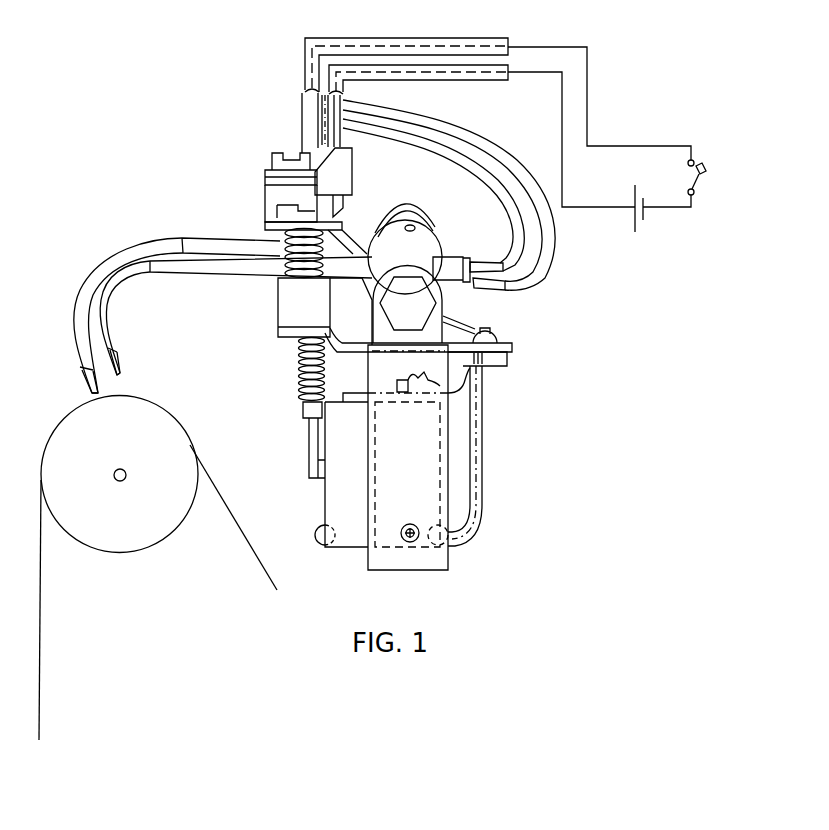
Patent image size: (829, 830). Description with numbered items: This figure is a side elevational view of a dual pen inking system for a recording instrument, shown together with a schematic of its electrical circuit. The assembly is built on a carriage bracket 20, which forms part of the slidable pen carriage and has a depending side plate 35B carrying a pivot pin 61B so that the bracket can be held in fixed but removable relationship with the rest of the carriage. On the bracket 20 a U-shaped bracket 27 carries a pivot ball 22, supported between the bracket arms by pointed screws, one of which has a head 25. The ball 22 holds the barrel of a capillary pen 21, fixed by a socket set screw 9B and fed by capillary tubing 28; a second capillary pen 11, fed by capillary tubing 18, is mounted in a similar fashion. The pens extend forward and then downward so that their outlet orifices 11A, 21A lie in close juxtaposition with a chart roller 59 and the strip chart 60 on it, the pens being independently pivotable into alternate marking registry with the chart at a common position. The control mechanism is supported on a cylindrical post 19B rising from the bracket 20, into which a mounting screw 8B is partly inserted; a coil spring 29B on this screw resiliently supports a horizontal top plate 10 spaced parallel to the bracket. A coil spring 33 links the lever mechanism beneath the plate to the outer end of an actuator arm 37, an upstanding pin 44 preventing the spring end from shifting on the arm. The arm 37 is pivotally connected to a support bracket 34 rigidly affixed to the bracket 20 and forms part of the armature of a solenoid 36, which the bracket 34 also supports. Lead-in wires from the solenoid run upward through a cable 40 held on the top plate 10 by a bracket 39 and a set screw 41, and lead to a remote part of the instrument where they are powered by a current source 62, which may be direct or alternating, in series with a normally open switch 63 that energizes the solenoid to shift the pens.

The mounting screw 8B is at (279, 213).
The socket set screw 9B is at (416, 233).
The top plate 10 is at (268, 227).
The capillary pen 11 is at (190, 242).
The outlet orifice 11A is at (121, 375).
The capillary tubing 18 is at (553, 237).
The cylindrical post 19B is at (287, 314).
The carriage bracket 20 is at (512, 348).
The capillary pen 21 is at (184, 265).
The outlet orifice 21A is at (89, 389).
The pivot ball 22 is at (388, 256).
The head 25 is at (396, 307).
The U-shaped bracket 27 is at (420, 209).
The capillary tubing 28 is at (518, 237).
The coil spring 29B is at (286, 264).
The coil spring 33 is at (300, 346).
The support bracket 34 is at (405, 379).
The side plate 35B is at (394, 567).
The solenoid 36 is at (328, 493).
The actuator arm 37 is at (305, 433).
The bracket 39 is at (323, 191).
The cable 40 is at (310, 110).
The set screw 41 is at (274, 160).
The upstanding pin 44 is at (301, 400).
The chart roller 59 is at (105, 525).
The strip chart 60 is at (42, 638).
The pivot pin 61B is at (404, 527).
The current source 62 is at (642, 215).
The normally open switch 63 is at (699, 183).